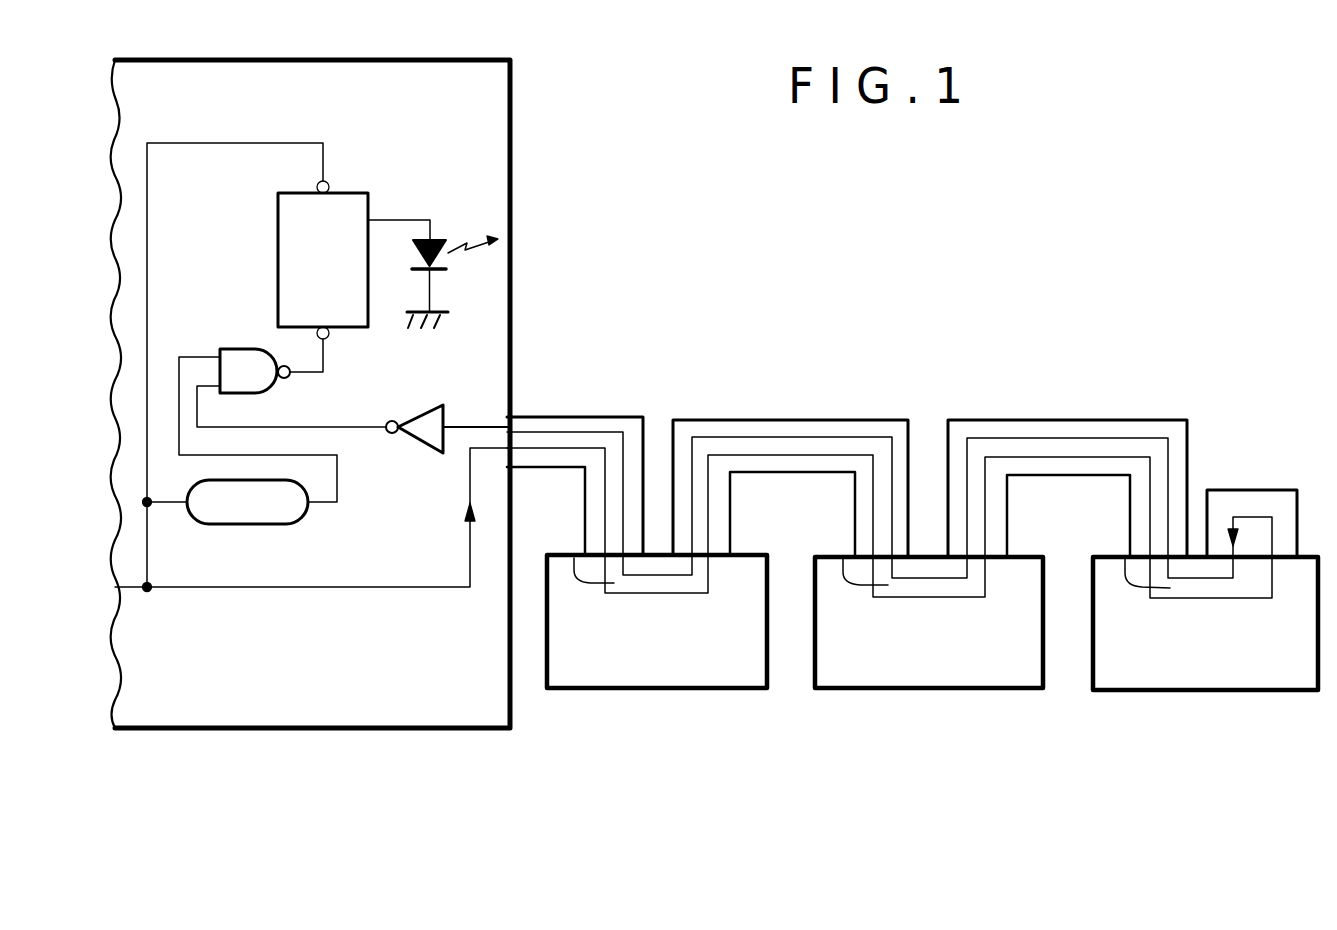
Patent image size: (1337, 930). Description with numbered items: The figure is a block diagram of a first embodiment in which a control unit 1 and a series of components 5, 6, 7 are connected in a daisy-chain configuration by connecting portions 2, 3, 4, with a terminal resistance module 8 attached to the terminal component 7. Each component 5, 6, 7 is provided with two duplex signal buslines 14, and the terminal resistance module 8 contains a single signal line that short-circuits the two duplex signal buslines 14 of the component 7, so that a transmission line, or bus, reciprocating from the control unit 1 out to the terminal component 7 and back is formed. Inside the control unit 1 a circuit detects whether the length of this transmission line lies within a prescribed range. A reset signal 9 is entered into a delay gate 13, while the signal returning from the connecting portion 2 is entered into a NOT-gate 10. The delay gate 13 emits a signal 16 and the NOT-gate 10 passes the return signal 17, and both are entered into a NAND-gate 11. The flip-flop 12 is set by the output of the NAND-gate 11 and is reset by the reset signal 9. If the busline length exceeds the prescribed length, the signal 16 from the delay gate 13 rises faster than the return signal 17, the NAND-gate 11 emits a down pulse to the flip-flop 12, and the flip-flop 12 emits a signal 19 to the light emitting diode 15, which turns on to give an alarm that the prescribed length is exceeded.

The control unit 1 is at (420, 60).
The connecting portion 2 is at (597, 416).
The connecting portion 3 is at (836, 418).
The connecting portion 4 is at (1130, 420).
The component 5 is at (748, 690).
The component 6 is at (972, 692).
The terminal component 7 is at (1258, 695).
The terminal resistance module 8 is at (1262, 489).
The reset signal 9 is at (422, 590).
The NOT-gate 10 is at (420, 418).
The NAND-gate 11 is at (237, 345).
The flip-flop 12 is at (365, 190).
The delay gate 13 is at (287, 526).
The duplex signal buslines 14 is at (578, 555).
The light emitting diode 15 is at (445, 237).
The signal emitted from the delay gate 16 is at (338, 480).
The return signal 17 is at (473, 425).
The signal emitted from the flip-flop 19 is at (402, 218).